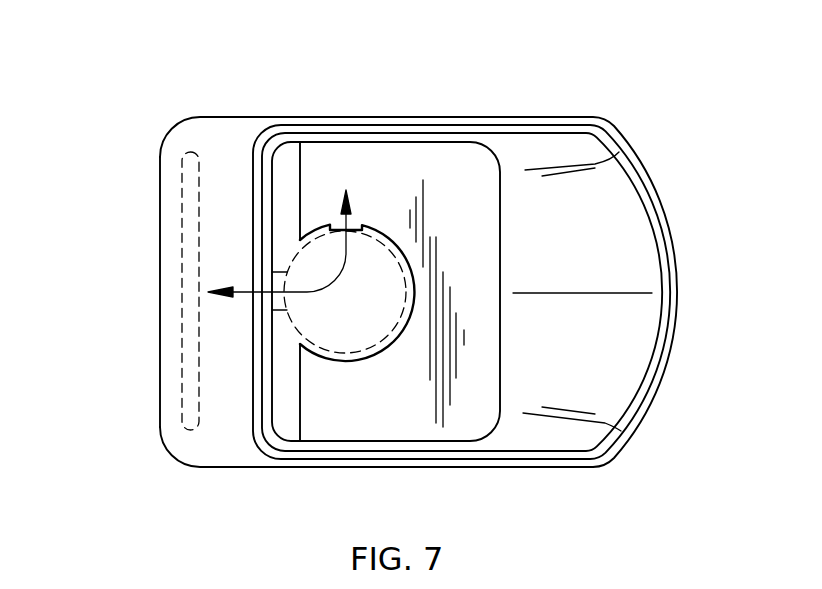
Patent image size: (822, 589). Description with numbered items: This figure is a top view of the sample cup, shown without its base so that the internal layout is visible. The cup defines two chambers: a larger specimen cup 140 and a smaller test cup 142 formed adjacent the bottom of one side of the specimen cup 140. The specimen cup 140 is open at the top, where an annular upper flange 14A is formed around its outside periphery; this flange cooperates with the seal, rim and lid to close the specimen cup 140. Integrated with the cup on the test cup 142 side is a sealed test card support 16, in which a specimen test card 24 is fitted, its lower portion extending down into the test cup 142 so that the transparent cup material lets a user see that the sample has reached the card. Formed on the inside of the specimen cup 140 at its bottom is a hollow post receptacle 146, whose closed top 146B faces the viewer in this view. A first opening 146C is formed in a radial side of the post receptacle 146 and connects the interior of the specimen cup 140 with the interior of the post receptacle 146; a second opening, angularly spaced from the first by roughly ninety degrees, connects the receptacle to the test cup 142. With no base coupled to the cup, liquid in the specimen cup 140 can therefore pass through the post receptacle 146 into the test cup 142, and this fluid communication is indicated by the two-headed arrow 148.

The upper flange 14A is at (568, 117).
The sealed test card support 16 is at (198, 467).
The specimen test card 24 is at (200, 165).
The specimen cup 140 is at (622, 182).
The test cup 142 is at (167, 290).
The post receptacle 146 is at (386, 245).
The closed top 146B is at (357, 305).
The first opening 146C is at (338, 227).
The two-headed arrow 148 is at (204, 230).